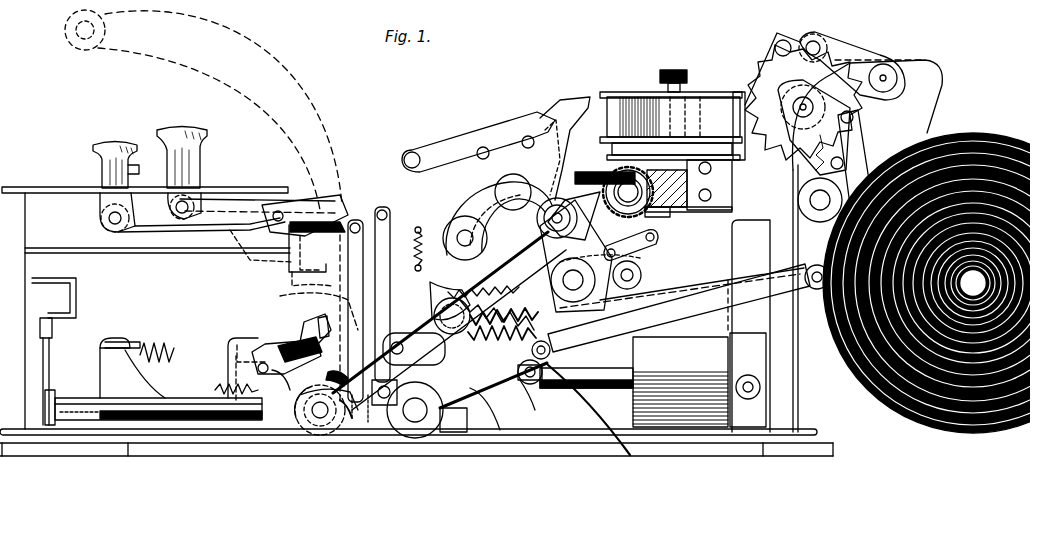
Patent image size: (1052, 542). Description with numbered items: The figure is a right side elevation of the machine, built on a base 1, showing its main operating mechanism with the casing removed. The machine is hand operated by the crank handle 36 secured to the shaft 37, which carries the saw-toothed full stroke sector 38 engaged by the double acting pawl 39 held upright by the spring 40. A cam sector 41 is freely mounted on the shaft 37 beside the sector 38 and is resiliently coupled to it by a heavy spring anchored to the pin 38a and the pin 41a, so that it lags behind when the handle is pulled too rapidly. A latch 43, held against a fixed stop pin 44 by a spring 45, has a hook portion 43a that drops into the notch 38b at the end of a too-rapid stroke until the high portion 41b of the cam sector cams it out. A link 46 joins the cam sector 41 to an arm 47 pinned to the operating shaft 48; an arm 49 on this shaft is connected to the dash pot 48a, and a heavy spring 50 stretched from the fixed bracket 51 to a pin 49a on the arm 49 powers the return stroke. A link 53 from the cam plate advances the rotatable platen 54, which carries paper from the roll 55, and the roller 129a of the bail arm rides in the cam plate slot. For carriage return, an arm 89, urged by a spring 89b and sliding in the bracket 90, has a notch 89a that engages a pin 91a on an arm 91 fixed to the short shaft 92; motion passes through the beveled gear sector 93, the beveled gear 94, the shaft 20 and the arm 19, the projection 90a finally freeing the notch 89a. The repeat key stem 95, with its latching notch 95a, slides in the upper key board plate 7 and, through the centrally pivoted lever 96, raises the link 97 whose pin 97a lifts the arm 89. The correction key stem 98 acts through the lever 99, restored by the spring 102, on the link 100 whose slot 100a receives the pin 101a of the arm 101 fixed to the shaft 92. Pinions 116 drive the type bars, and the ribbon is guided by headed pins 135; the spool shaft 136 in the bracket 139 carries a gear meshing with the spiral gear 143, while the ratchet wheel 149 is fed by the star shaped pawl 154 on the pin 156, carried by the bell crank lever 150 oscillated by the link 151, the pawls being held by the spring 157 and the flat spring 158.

The base 1 is at (572, 443).
The upper key board plate 7 is at (42, 188).
The arm 19 is at (50, 375).
The shaft 20 is at (198, 420).
The crank handle 36 is at (364, 130).
The shaft 37 is at (420, 424).
The saw-toothed sector 38 is at (486, 316).
The pin 38a is at (330, 295).
The notch 38b is at (293, 277).
The double acting pawl 39 is at (450, 292).
The spring 40 is at (483, 296).
The cam sector 41 is at (478, 388).
The pin 41a is at (514, 384).
The high portion 41b is at (406, 261).
The latch 43 is at (303, 334).
The hook portion 43a is at (385, 340).
The stop pin 44 is at (262, 350).
The spring 45 is at (215, 390).
The link 46 is at (407, 244).
The arm 47 is at (590, 256).
The operating shaft 48 is at (655, 276).
The dash pot 48a is at (700, 427).
The arm 49 is at (552, 349).
The pin 49a is at (545, 368).
The heavy spring 50 is at (172, 347).
The fixed bracket 51 is at (131, 378).
The link 53 is at (700, 306).
The rotatable platen 54 is at (790, 150).
The roll 55 is at (980, 432).
The arm 89 is at (548, 390).
The notch 89a is at (319, 334).
The spring 89b is at (605, 422).
The bracket 90 is at (360, 412).
The projection 90a is at (230, 353).
The arm 91 is at (318, 420).
The pin 91a is at (332, 420).
The short shaft 92 is at (352, 420).
The beveled gear sector 93 is at (228, 384).
The beveled gear 94 is at (278, 395).
The stem 95 is at (103, 172).
The notch 95a is at (133, 173).
The centrally pivoted lever 96 is at (157, 232).
The link 97 is at (392, 222).
The pin 97a is at (396, 420).
The stem 98 is at (200, 166).
The centrally pivoted lever 99 is at (247, 199).
The link 100 is at (289, 262).
The slot 100a is at (324, 372).
The arm 101 is at (372, 402).
The pin 101a is at (355, 398).
The spring 102 is at (322, 208).
The pinions 116 is at (505, 256).
The roller 129a is at (655, 290).
The headed pins 135 is at (768, 62).
The shaft 136 is at (681, 69).
The bracket 139 is at (722, 186).
The spiral gear 143 is at (680, 210).
The ratchet wheel 149 is at (636, 100).
The bell crank lever 150 is at (655, 243).
The link 151 is at (640, 256).
The star shaped pawl 154 is at (618, 172).
The pin 156 is at (584, 100).
The spring 157 is at (698, 92).
The flat spring 158 is at (556, 150).